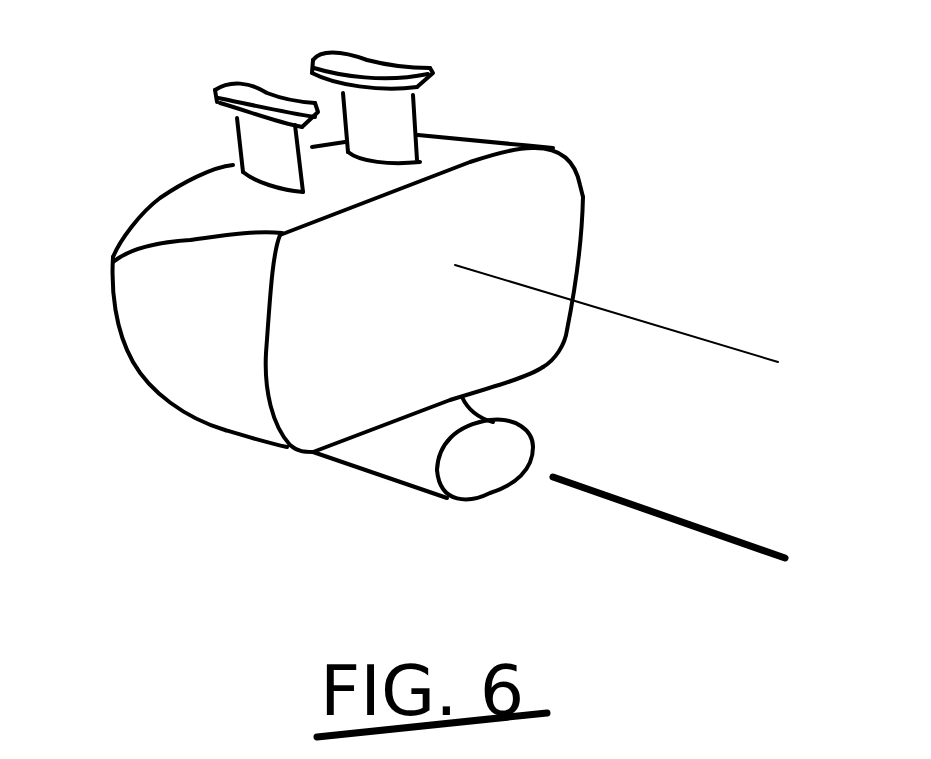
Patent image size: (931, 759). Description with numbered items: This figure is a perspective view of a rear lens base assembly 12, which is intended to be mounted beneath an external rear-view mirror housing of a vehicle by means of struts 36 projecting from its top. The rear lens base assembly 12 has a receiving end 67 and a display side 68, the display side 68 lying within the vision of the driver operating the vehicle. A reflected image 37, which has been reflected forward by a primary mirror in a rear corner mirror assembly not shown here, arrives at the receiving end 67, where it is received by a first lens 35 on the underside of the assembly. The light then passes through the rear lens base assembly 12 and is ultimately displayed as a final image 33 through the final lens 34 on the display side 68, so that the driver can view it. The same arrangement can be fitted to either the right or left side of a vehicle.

The rear lens base assembly 12 is at (163, 198).
The final image 33 is at (667, 327).
The final lens 34 is at (540, 207).
The first lens 35 is at (518, 442).
The struts 36 is at (235, 148).
The reflected image 37 is at (707, 528).
The receiving end 67 is at (507, 510).
The display side 68 is at (288, 365).